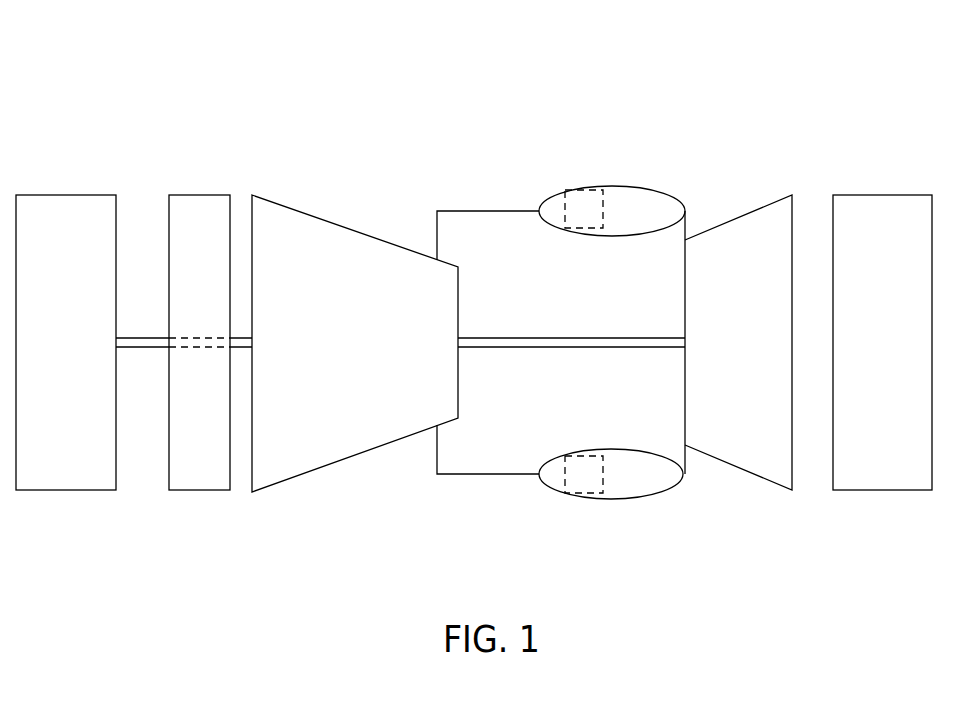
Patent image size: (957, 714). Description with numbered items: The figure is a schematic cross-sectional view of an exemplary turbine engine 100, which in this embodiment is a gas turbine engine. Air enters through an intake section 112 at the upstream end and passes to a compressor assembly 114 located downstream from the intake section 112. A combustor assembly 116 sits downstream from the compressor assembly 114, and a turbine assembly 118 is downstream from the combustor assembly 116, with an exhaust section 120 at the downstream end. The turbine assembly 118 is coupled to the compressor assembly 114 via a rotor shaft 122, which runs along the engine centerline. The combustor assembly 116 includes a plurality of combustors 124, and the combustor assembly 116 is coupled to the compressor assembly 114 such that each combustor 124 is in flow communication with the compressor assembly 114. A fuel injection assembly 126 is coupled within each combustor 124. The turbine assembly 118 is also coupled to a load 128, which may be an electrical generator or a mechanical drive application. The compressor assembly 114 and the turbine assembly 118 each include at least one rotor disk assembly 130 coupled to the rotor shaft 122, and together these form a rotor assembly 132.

The turbine engine 100 is at (177, 87).
The intake section 112 is at (199, 195).
The compressor assembly 114 is at (315, 469).
The combustor assembly 116 is at (628, 150).
The turbine assembly 118 is at (790, 195).
The exhaust section 120 is at (898, 195).
The rotor shaft 122 is at (575, 338).
The combustor 124 is at (618, 182).
The fuel injection assembly 126 is at (585, 190).
The load 128 is at (29, 195).
The rotor disk assembly 130 is at (803, 85).
The rotor assembly 132 is at (763, 508).